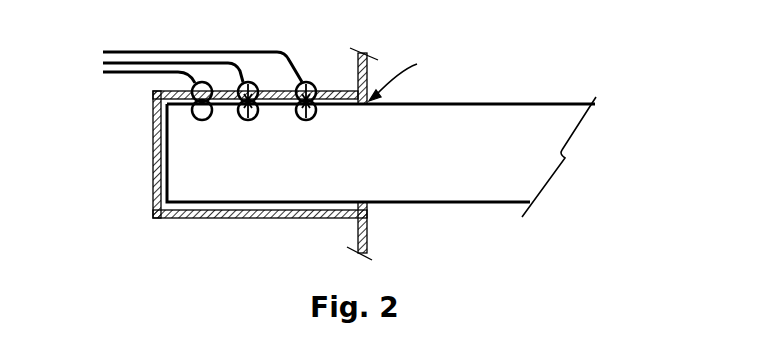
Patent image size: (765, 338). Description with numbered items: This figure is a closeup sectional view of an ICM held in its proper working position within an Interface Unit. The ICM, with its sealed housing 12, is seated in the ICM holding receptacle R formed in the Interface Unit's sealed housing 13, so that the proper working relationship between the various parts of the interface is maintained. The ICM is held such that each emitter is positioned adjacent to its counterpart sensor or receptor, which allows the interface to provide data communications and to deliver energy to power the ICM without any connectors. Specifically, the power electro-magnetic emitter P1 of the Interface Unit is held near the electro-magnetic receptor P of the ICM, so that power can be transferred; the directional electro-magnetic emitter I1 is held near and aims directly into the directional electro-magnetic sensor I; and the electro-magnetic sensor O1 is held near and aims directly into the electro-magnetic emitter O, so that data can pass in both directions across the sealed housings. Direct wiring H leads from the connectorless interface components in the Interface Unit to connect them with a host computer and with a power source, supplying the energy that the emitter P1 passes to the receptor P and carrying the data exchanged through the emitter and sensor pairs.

The sealed housing of the Interface Unit 13 is at (152, 116).
The sealed housing of the ICM 12 is at (368, 107).
The element ICM is at (476, 160).
The direct wiring H is at (102, 47).
The power electro-magnetic emitter P1 is at (203, 80).
The electro-magnetic sensor O1 is at (248, 80).
The directional electro-magnetic emitter I1 is at (305, 80).
The electro-magnetic receptor P is at (207, 121).
The electro-magnetic emitter O is at (252, 121).
The directional electro-magnetic sensor I is at (310, 121).
The ICM holding receptacle R is at (398, 71).